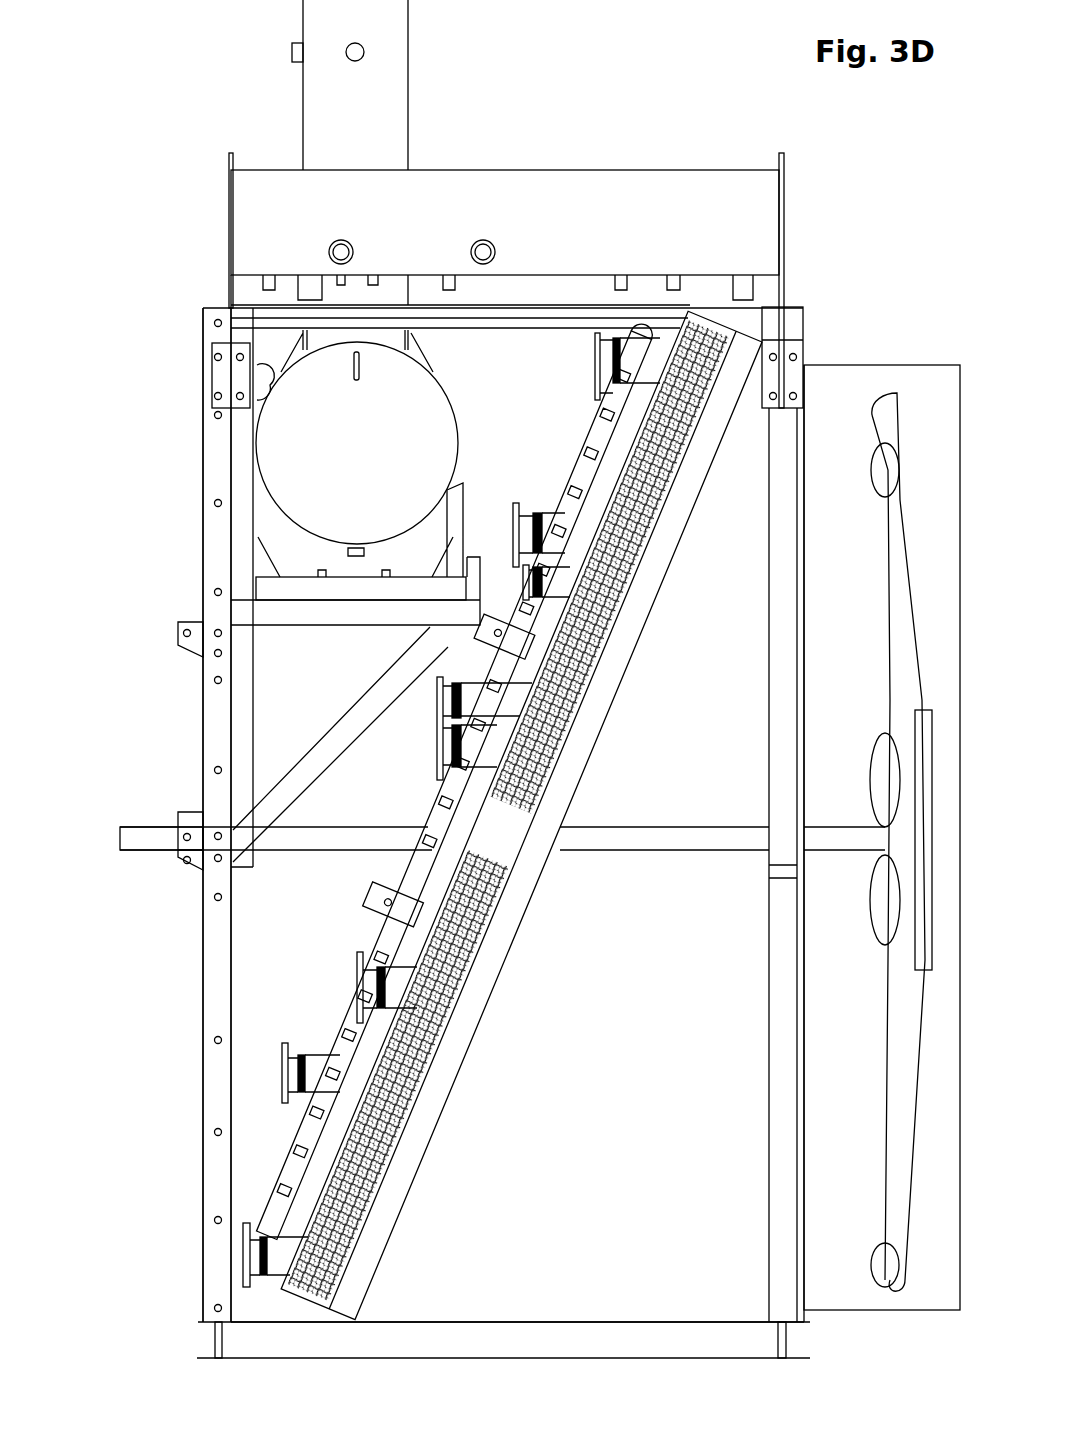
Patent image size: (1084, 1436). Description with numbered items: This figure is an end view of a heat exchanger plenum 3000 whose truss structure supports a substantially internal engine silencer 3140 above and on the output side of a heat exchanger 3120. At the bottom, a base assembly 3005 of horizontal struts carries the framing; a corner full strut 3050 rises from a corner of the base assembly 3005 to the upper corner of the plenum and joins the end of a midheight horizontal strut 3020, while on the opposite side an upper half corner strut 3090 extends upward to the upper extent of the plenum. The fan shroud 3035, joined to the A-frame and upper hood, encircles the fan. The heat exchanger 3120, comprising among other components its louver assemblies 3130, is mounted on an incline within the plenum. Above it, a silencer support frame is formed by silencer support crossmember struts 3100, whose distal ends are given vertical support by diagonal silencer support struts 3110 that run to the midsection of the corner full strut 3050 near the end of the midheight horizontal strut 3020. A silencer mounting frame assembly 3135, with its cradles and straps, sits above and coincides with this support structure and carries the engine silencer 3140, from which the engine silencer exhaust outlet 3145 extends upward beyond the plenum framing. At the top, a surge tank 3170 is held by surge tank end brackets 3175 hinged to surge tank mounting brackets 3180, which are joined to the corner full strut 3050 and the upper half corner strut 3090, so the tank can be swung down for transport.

The heat exchanger plenum 3000 is at (893, 124).
The base assembly 3005 is at (213, 1340).
The midheight horizontal strut 3020 is at (125, 835).
The fan shroud 3035 is at (928, 370).
The corner full strut 3050 is at (212, 1153).
The upper half corner strut 3090 is at (780, 545).
The silencer support crossmember strut 3100 is at (290, 620).
The diagonal silencer support strut 3110 is at (333, 753).
The heat exchanger 3120 is at (482, 995).
The louver assembly 3130 is at (465, 790).
The silencer mounting frame assembly 3135 is at (385, 580).
The engine silencer 3140 is at (428, 470).
The engine silencer exhaust outlet 3145 is at (408, 128).
The surge tank 3170 is at (604, 190).
The surge tank end bracket 3175 is at (231, 270).
The surge tank mounting bracket 3180 is at (225, 380).